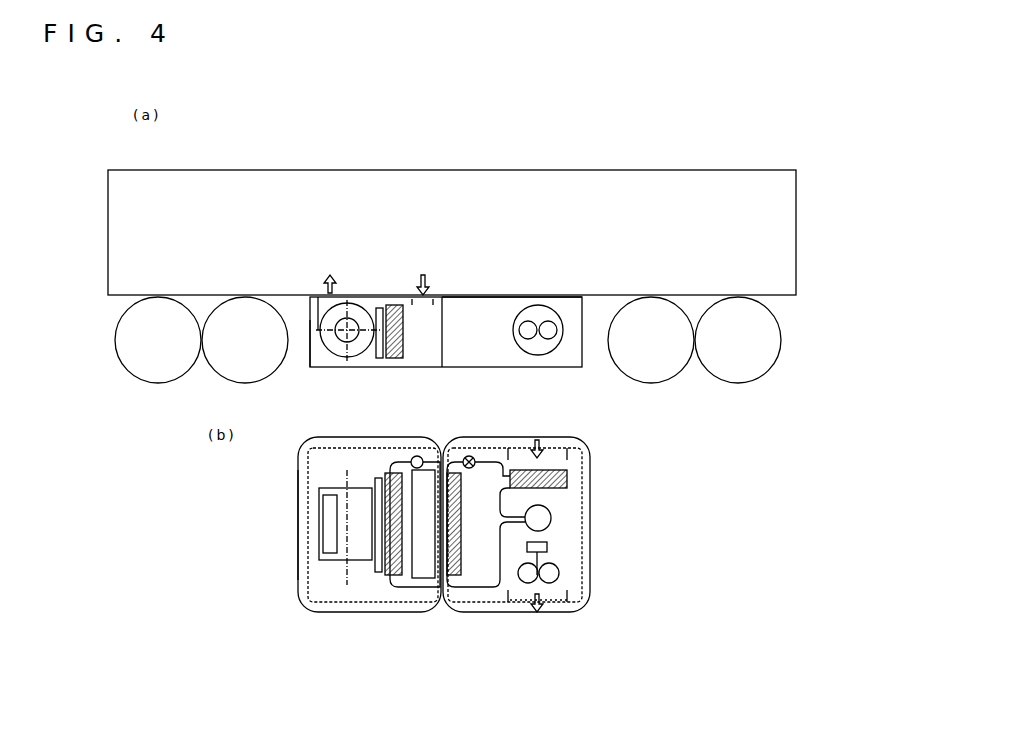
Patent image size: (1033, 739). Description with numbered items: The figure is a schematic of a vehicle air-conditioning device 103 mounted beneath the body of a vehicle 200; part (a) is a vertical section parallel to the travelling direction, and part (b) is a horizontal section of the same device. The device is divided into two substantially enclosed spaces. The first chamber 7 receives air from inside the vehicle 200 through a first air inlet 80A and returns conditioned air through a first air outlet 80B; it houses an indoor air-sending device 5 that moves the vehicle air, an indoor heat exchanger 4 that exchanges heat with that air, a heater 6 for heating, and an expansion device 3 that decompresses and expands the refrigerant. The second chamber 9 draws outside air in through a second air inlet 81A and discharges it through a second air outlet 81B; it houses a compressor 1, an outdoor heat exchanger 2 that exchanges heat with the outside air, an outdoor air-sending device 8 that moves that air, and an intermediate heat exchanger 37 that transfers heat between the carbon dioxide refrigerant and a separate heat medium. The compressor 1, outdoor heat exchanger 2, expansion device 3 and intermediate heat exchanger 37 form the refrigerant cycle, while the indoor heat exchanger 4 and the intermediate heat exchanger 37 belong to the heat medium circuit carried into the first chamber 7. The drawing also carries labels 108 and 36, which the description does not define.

The vehicle 200 is at (628, 182).
The vehicle air-conditioning device 103 is at (613, 440).
The air flow / mounting direction 108 is at (527, 291).
The first air inlet 80A is at (428, 297).
The first air outlet 80B is at (341, 297).
The second air inlet 81A is at (562, 446).
The second air outlet 81B is at (538, 614).
The second chamber 9 is at (510, 368).
The first chamber 7 is at (263, 583).
The indoor air-sending device 5 is at (332, 358).
The heater 6 is at (376, 358).
The indoor heat exchanger 4 is at (393, 358).
The outdoor air-sending device 8 is at (548, 334).
The coolant pipe circuit with sensor 36 is at (417, 456).
The intermediate heat exchanger 37 is at (455, 577).
The expansion device 3 is at (469, 456).
The outdoor heat exchanger 2 is at (568, 478).
The compressor 1 is at (552, 516).